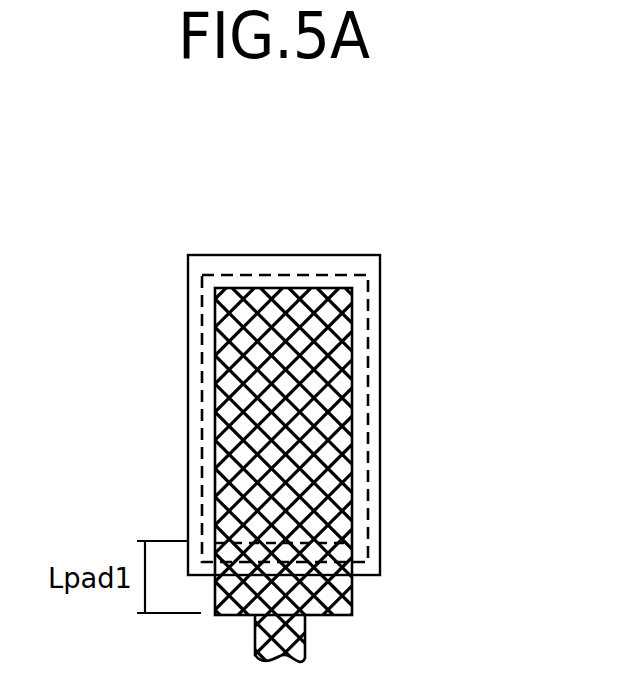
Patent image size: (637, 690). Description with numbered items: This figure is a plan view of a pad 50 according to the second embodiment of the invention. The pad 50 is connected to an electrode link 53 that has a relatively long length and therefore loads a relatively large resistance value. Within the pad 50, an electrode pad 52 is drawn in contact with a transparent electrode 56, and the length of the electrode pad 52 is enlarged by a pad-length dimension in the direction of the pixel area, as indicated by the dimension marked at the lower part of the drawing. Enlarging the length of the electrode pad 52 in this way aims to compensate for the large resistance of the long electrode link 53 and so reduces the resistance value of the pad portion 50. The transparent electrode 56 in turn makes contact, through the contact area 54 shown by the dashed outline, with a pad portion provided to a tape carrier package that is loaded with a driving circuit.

The pad 50 is at (345, 221).
The electrode pad 52 is at (325, 470).
The electrode link 53 is at (305, 637).
The contact area 54 is at (366, 519).
The transparent electrode 56 is at (192, 430).